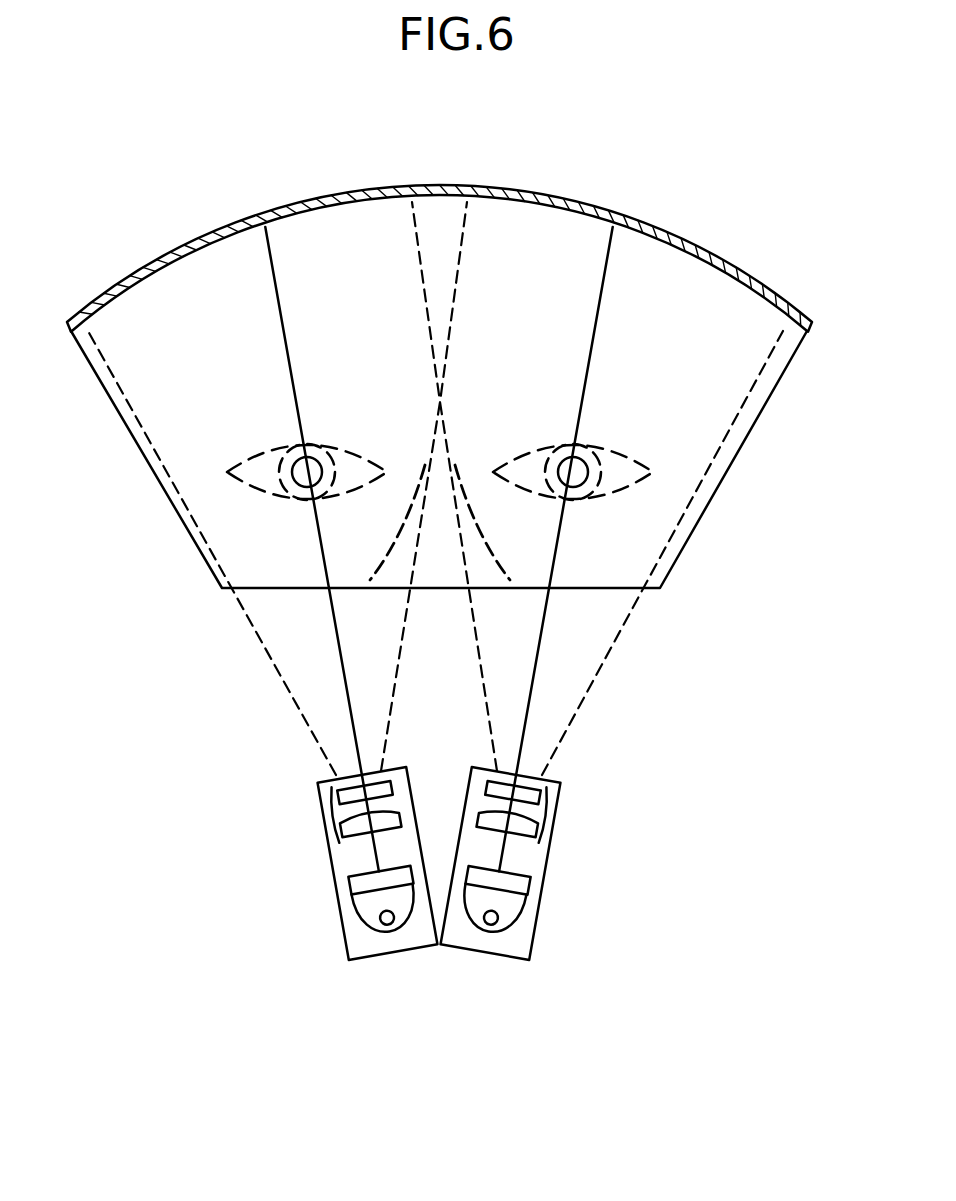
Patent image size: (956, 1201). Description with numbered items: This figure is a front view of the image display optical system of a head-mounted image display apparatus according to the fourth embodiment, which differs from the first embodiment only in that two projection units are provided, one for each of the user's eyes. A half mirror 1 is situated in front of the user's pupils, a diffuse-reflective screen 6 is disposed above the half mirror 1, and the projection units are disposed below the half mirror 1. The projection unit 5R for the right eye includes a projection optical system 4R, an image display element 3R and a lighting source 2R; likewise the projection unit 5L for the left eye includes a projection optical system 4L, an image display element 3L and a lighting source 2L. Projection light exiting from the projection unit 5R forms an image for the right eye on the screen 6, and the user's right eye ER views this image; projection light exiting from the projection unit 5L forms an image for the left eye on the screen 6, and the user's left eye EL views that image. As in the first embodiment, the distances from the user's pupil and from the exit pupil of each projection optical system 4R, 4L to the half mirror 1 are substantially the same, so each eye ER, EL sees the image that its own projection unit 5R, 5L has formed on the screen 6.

The half mirror 1 is at (662, 571).
The diffuse-reflective screen 6 is at (775, 289).
The right eye ER is at (252, 457).
The left eye EL is at (625, 453).
The projection unit for the right eye 5R is at (257, 820).
The projection unit for the left eye 5L is at (639, 828).
The projection optical system 4R is at (330, 822).
The projection optical system 4L is at (557, 818).
The image display element 3R is at (349, 887).
The image display element 3L is at (527, 885).
The lighting source 2R is at (360, 930).
The lighting source 2L is at (520, 922).